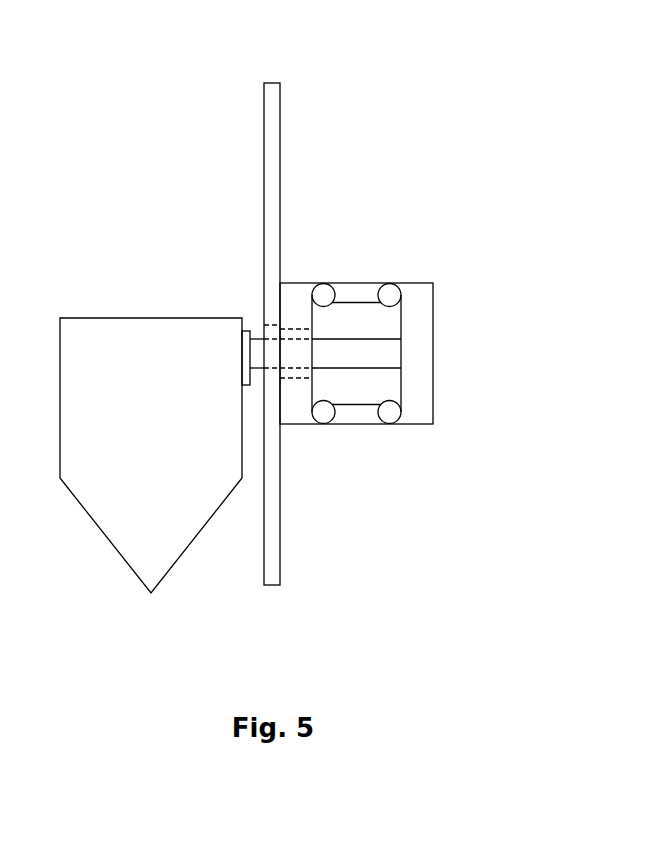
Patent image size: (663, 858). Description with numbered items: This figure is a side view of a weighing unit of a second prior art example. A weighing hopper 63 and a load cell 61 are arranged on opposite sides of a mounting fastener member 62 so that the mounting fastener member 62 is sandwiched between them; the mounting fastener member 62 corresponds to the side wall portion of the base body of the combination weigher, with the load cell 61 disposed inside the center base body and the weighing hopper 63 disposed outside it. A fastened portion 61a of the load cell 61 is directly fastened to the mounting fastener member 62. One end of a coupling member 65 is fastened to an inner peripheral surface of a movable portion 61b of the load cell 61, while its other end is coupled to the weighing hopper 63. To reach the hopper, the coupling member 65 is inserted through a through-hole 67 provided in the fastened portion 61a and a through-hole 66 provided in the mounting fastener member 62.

The load cell 61 is at (401, 311).
The fastened portion 61a is at (296, 290).
The movable portion 61b is at (418, 290).
The mounting fastener member 62 is at (272, 83).
The weighing hopper 63 is at (142, 318).
The coupling member 65 is at (375, 368).
The through-hole 66 is at (276, 378).
The through-hole 67 is at (312, 368).